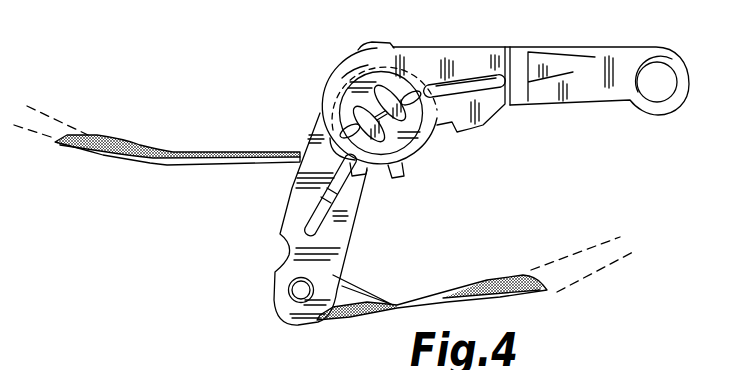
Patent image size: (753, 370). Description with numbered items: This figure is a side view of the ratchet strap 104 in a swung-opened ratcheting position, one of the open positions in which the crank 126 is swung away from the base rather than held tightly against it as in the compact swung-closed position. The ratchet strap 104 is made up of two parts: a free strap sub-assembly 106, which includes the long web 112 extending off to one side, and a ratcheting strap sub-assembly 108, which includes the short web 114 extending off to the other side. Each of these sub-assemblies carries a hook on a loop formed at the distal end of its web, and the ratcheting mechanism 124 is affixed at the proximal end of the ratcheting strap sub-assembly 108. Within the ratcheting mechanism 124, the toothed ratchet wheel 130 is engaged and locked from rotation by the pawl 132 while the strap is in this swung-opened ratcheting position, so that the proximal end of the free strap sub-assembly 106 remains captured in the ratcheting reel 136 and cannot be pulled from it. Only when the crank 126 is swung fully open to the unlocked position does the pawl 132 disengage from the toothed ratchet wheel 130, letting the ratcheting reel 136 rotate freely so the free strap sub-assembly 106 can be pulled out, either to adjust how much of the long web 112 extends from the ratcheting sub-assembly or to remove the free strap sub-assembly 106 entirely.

The ratchet strap 104 is at (233, 247).
The free strap sub-assembly 106 is at (177, 157).
The ratcheting strap sub-assembly 108 is at (455, 315).
The long web 112 is at (167, 167).
The short web 114 is at (531, 305).
The ratcheting mechanism 124 is at (365, 48).
The crank 126 is at (661, 118).
The toothed ratchet wheel 130 is at (400, 174).
The pawl 132 is at (462, 83).
The ratcheting reel 136 is at (355, 114).